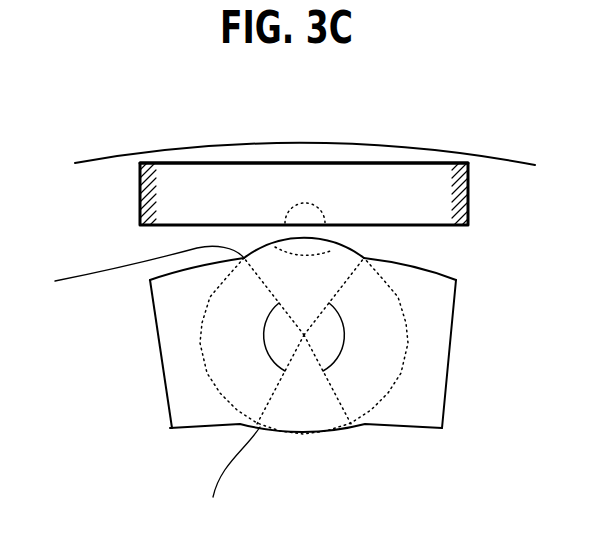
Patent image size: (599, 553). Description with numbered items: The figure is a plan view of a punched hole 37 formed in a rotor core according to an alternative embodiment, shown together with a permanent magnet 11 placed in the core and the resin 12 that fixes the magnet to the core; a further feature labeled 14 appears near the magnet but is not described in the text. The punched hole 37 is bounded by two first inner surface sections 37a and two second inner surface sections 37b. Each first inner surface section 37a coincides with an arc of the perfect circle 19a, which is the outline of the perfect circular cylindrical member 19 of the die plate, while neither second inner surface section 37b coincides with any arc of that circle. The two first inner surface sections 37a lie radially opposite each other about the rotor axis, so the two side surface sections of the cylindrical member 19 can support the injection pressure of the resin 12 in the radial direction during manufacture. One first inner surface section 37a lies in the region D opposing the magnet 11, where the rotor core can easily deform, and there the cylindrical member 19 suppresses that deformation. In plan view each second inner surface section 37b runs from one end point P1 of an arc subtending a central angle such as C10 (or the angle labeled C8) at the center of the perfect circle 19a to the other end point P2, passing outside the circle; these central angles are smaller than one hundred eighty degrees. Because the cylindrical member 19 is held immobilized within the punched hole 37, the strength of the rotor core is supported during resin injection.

The permanent magnet 11 is at (304, 155).
The resin 12 is at (468, 190).
The contact surface 14 is at (330, 162).
The perfect circular cylindrical member 19 is at (220, 361).
The perfect circle 19a is at (202, 332).
The punched hole 37 is at (306, 385).
The first inner surface section 37a is at (356, 238).
The second inner surface section 37b is at (158, 372).
The region opposing the magnet D is at (268, 240).
The end point P1 is at (231, 480).
The other end point P2 is at (137, 272).
The central angle C10 is at (253, 337).
The circle C8 is at (353, 337).